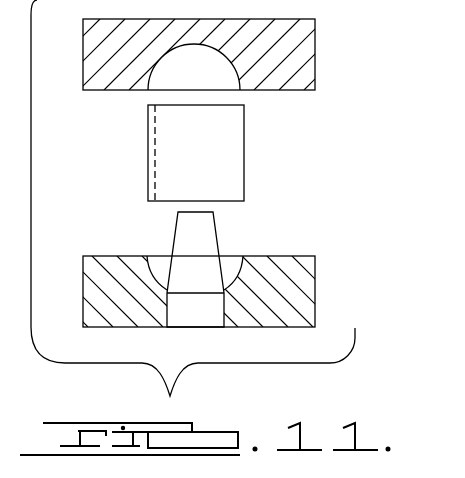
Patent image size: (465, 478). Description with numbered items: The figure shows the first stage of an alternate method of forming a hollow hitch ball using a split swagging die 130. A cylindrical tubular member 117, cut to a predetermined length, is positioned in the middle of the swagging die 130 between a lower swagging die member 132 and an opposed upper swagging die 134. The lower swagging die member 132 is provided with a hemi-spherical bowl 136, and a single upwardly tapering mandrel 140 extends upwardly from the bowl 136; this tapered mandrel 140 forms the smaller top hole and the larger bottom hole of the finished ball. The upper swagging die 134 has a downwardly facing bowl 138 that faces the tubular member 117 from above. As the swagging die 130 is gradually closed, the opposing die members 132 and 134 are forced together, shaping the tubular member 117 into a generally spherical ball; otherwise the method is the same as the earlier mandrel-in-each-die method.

The split swagging die 130 is at (355, 191).
The upper swagging die 134 is at (296, 58).
The downwardly facing bowl 138 is at (240, 93).
The specimen block 117 is at (244, 145).
The upwardly tapering mandrel 140 is at (177, 224).
The lower swagging die member 132 is at (309, 290).
The hemi-spherical bowl 136 is at (236, 258).